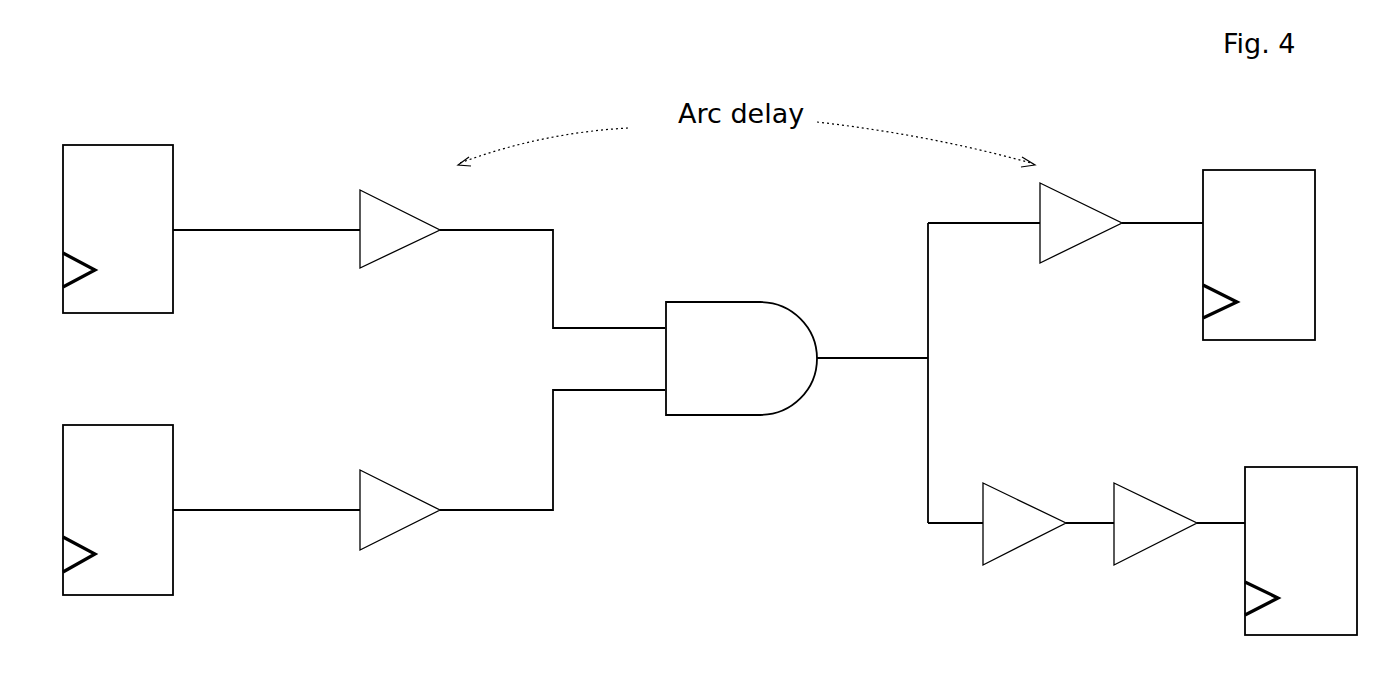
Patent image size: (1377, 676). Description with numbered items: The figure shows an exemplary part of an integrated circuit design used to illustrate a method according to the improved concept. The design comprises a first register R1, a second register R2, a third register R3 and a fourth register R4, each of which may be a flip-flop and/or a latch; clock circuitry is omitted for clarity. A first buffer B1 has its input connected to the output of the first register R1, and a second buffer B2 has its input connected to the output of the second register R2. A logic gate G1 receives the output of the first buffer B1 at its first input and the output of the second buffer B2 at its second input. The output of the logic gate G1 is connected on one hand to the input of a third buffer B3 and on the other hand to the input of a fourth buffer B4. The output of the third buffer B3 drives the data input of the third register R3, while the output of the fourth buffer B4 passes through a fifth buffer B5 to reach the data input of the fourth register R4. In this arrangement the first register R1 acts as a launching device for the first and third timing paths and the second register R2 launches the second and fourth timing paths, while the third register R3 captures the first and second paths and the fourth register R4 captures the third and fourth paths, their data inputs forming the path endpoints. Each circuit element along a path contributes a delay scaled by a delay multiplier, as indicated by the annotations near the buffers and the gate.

The first register R1 is at (118, 229).
The second register R2 is at (118, 510).
The third register R3 is at (1259, 255).
The fourth register R4 is at (1301, 551).
The first buffer B1 is at (407, 219).
The second buffer B2 is at (404, 496).
The third buffer B3 is at (1085, 210).
The fourth buffer B4 is at (1024, 510).
The fifth buffer B5 is at (1158, 510).
The logic gate G1 is at (734, 360).